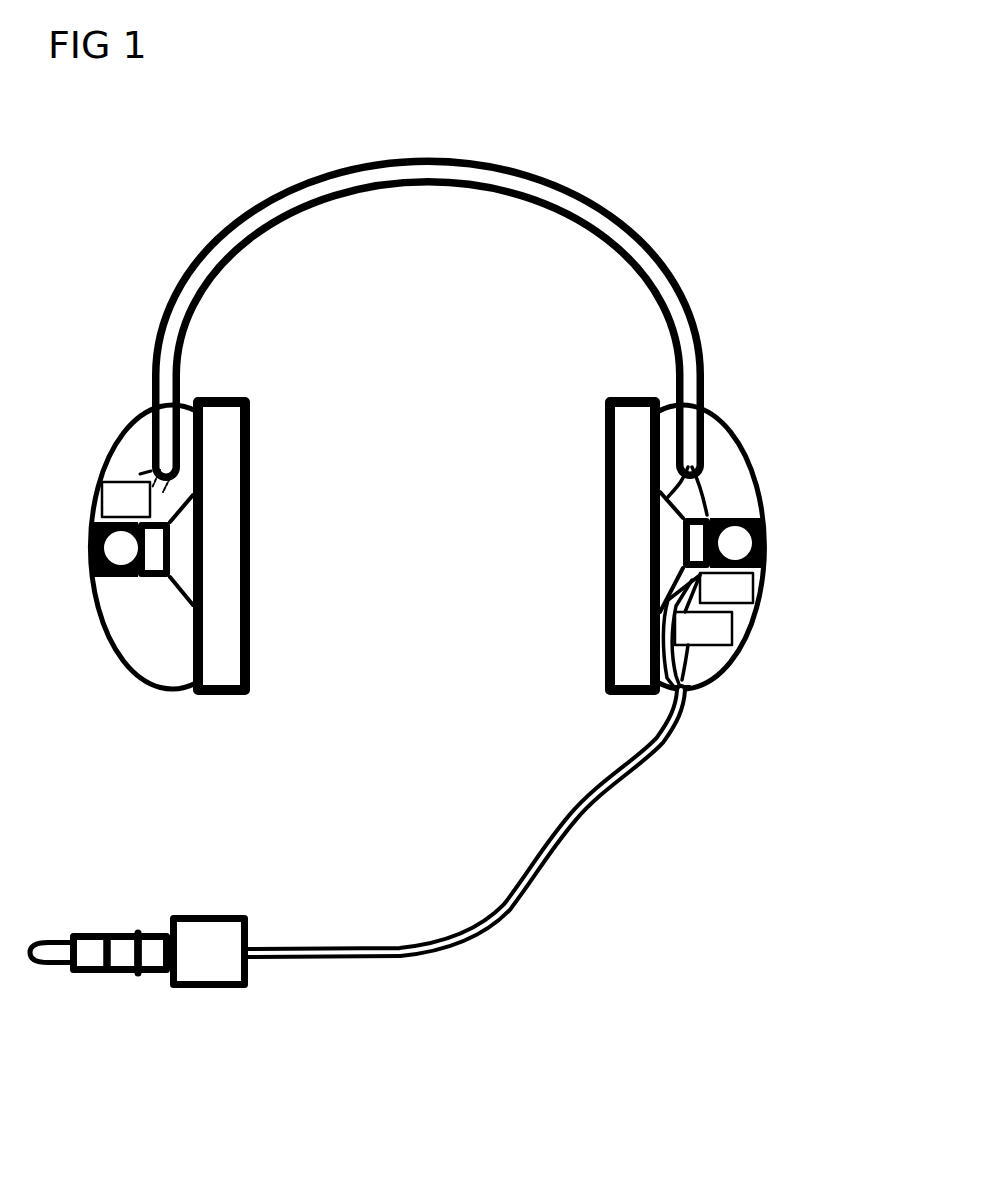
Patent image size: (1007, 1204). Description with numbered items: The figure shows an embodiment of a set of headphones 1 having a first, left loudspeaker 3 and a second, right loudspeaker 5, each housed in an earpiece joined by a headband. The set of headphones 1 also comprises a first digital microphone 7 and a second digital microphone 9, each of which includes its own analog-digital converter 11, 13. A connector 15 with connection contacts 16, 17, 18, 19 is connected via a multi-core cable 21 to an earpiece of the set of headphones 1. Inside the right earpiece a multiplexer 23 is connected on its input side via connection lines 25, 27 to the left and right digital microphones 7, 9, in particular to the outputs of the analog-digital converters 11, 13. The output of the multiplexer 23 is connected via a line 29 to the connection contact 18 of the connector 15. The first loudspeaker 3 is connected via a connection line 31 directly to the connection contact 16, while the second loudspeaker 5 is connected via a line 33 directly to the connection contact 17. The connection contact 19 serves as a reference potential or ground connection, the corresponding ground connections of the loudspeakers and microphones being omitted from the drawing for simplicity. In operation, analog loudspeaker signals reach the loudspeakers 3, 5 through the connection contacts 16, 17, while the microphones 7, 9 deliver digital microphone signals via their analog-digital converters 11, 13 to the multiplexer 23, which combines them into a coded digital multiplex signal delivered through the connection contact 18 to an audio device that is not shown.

The set of headphones 1 is at (645, 183).
The first loudspeaker 3 is at (180, 548).
The second loudspeaker 5 is at (695, 553).
The first digital microphone 7 is at (122, 548).
The second digital microphone 9 is at (742, 542).
The analog-digital converter 11 is at (102, 490).
The analog-digital converter 13 is at (755, 590).
The connector 15 is at (213, 972).
The connection contact 16 is at (57, 945).
The connection contact 17 is at (90, 945).
The connection contact 18 is at (122, 948).
The connection contact 19 is at (157, 945).
The multi-core cable 21 is at (558, 848).
The multiplexer 23 is at (710, 643).
The connection line 25 is at (143, 472).
The connection line 27 is at (715, 607).
The line 29 is at (687, 665).
The connection line 31 is at (165, 493).
The line 33 is at (660, 617).